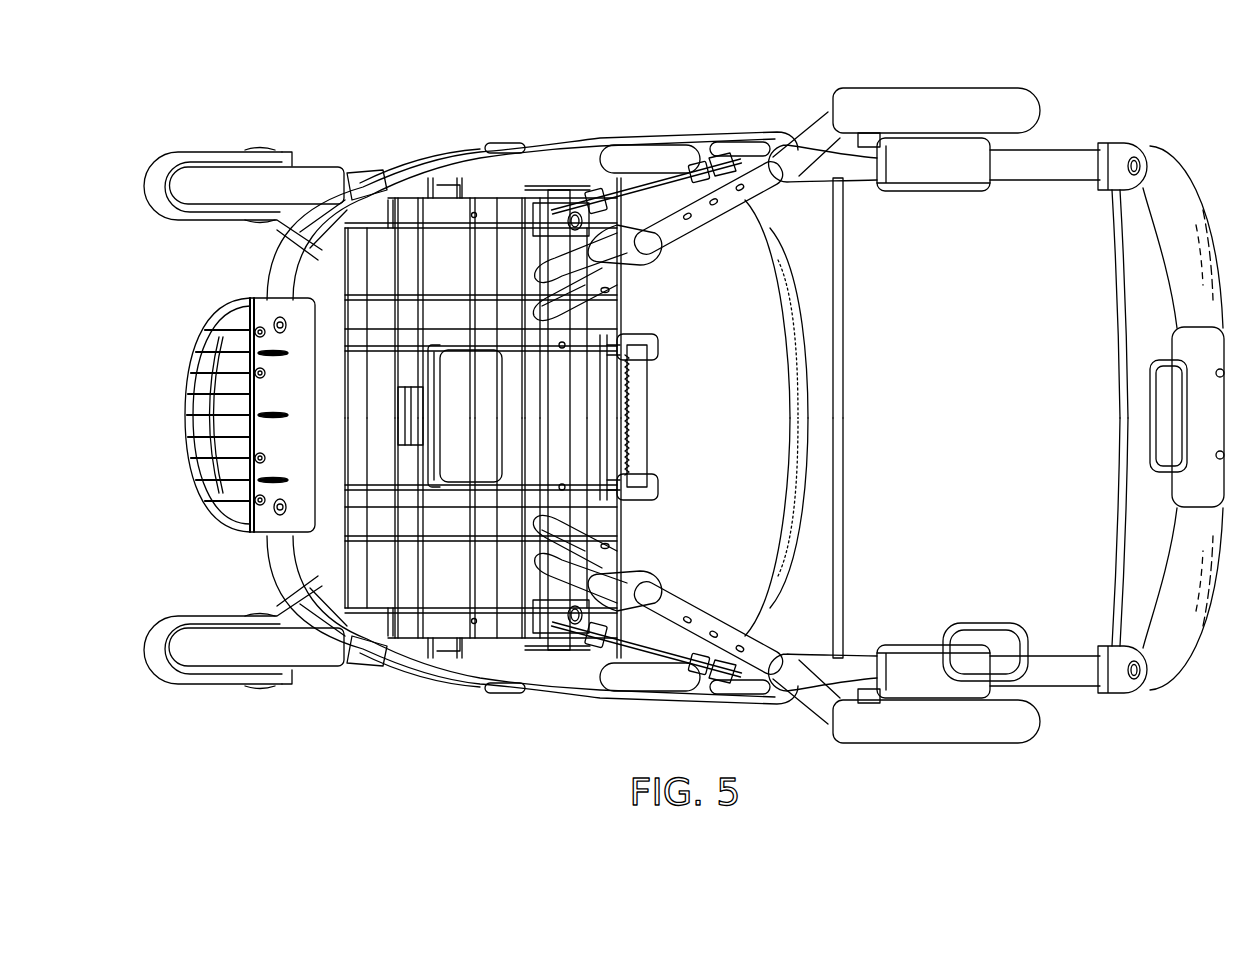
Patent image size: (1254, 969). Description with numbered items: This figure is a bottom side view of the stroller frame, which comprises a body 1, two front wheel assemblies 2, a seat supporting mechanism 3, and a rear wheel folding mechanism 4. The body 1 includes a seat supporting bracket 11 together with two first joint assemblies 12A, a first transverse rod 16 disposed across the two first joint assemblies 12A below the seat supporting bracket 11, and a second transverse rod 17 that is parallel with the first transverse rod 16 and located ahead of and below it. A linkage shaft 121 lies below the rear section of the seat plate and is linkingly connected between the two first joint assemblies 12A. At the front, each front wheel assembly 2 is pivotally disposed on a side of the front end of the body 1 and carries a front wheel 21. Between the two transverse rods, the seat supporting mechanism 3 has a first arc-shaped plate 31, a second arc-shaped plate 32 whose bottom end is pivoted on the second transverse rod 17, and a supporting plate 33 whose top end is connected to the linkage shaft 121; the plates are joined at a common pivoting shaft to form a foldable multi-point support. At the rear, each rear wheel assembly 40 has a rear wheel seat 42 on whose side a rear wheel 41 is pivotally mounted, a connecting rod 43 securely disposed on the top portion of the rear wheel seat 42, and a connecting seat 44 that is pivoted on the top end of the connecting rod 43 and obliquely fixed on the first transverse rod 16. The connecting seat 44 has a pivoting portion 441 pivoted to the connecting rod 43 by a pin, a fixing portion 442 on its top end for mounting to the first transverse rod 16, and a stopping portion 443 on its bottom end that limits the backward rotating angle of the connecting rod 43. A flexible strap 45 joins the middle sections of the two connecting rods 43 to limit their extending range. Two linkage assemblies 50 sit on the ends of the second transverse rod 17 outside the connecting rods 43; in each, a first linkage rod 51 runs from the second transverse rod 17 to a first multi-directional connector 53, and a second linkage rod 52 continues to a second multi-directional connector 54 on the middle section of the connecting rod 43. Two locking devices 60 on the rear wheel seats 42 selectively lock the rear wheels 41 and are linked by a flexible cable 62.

The body 1 is at (1082, 130).
The front wheel assembly 2 is at (148, 155).
The seat supporting mechanism 3 is at (412, 412).
The rear wheel folding mechanism 4 is at (903, 78).
The seat supporting bracket 11 is at (335, 548).
The first joint assembly 12A is at (503, 145).
The first transverse rod 16 is at (555, 366).
The second transverse rod 17 is at (485, 562).
The front wheel 21 is at (308, 176).
The first arc-shaped plate 31 is at (435, 465).
The second arc-shaped plate 32 is at (462, 378).
The supporting plate 33 is at (585, 433).
The rear wheel assembly 40 is at (762, 298).
The rear wheel 41 is at (1027, 104).
The rear wheel seat 42 is at (808, 143).
The connecting rod 43 is at (753, 168).
The connecting seat 44 is at (695, 247).
The flexible strap 45 is at (795, 423).
The linkage assembly 50 is at (580, 195).
The first linkage rod 51 is at (542, 192).
The second linkage rod 52 is at (638, 187).
The first multi-directional connector 53 is at (563, 200).
The second multi-directional connector 54 is at (735, 170).
The locking device 60 is at (940, 200).
The cable 62 is at (838, 527).
The linkage shaft 121 is at (578, 513).
The pivoting portion 441 is at (620, 280).
The fixing portion 442 is at (557, 303).
The stopping portion 443 is at (660, 255).